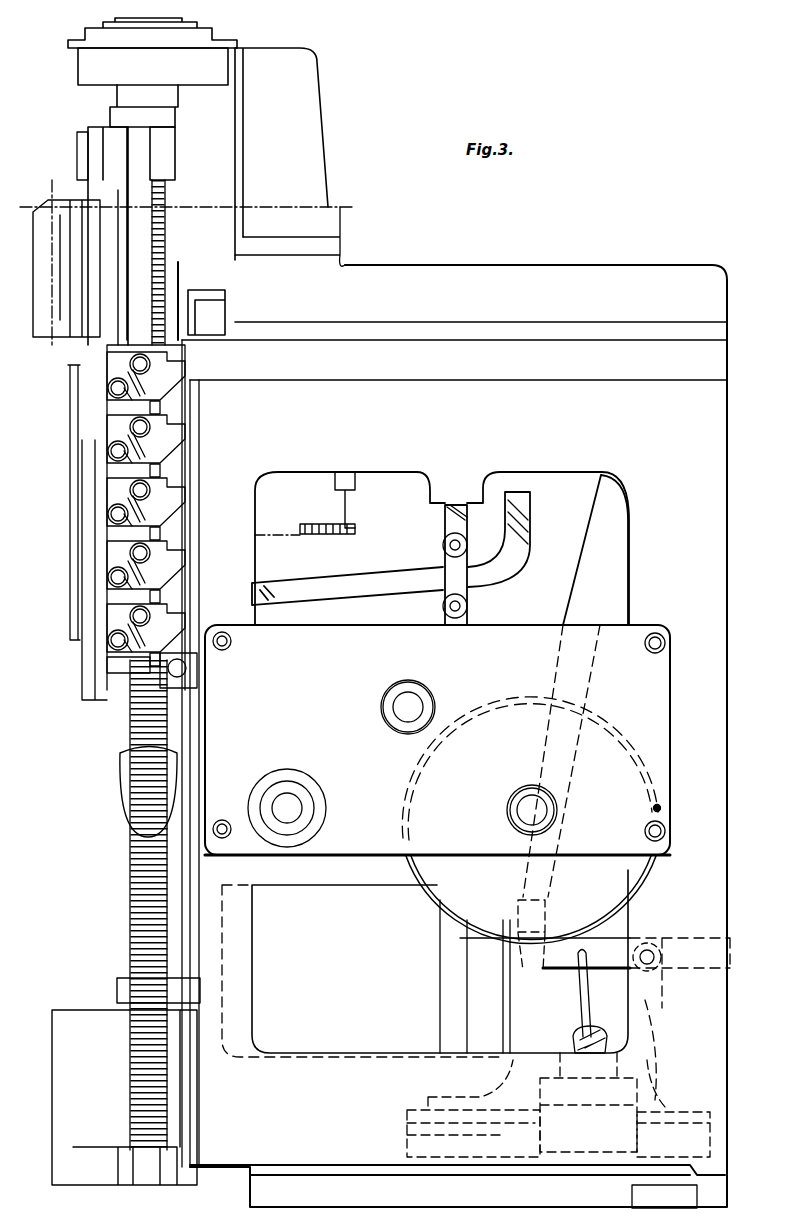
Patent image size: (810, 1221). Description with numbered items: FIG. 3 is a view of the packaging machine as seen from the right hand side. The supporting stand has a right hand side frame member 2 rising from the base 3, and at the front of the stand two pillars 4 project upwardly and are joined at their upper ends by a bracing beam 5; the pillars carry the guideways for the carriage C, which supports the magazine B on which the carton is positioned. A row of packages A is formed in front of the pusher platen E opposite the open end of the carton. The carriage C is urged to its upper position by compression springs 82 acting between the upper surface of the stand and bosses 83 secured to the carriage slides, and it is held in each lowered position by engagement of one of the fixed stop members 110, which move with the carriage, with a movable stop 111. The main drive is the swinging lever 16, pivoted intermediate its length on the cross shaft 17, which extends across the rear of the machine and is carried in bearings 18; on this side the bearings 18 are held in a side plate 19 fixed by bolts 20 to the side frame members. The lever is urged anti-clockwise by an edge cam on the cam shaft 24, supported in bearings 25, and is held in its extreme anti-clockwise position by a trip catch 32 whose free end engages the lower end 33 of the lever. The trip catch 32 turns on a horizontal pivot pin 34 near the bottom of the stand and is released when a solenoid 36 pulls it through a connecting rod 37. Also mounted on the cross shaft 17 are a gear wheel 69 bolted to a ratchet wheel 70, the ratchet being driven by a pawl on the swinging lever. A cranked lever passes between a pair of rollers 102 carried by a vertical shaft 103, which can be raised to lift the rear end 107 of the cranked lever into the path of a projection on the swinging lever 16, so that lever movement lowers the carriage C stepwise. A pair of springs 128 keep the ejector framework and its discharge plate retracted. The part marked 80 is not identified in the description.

The right hand side frame member 2 is at (672, 533).
The base 3 is at (457, 1186).
The pillars 4 is at (187, 154).
The bracing beam 5 is at (153, 66).
The swinging lever 16 is at (590, 565).
The cross shaft 17 is at (540, 816).
The bearings 18 is at (512, 810).
The side plate 19 is at (660, 702).
The bolts 20 is at (232, 641).
The cam shaft 24 is at (411, 700).
The bearings 25 is at (428, 695).
The trip catch 32 is at (685, 940).
The lower end of swinging lever 33 is at (535, 945).
The pivot pin 34 is at (650, 968).
The solenoid 36 is at (588, 1102).
The connecting rod 37 is at (578, 1012).
The gear wheel 69 is at (408, 797).
The ratchet wheel 70 is at (445, 905).
The cap 80 is at (212, 30).
The compression springs 82 is at (165, 247).
The bosses 83 is at (165, 142).
The rollers 102 is at (443, 545).
The vertical shaft 103 is at (454, 505).
The rear end of cranked lever 107 is at (518, 520).
The fixed stop members 110 is at (165, 505).
The movable stop 111 is at (186, 671).
The springs 128 is at (320, 524).
The packages A is at (212, 315).
The magazine B is at (62, 212).
The carriage C is at (140, 160).
The pusher platen E is at (220, 300).